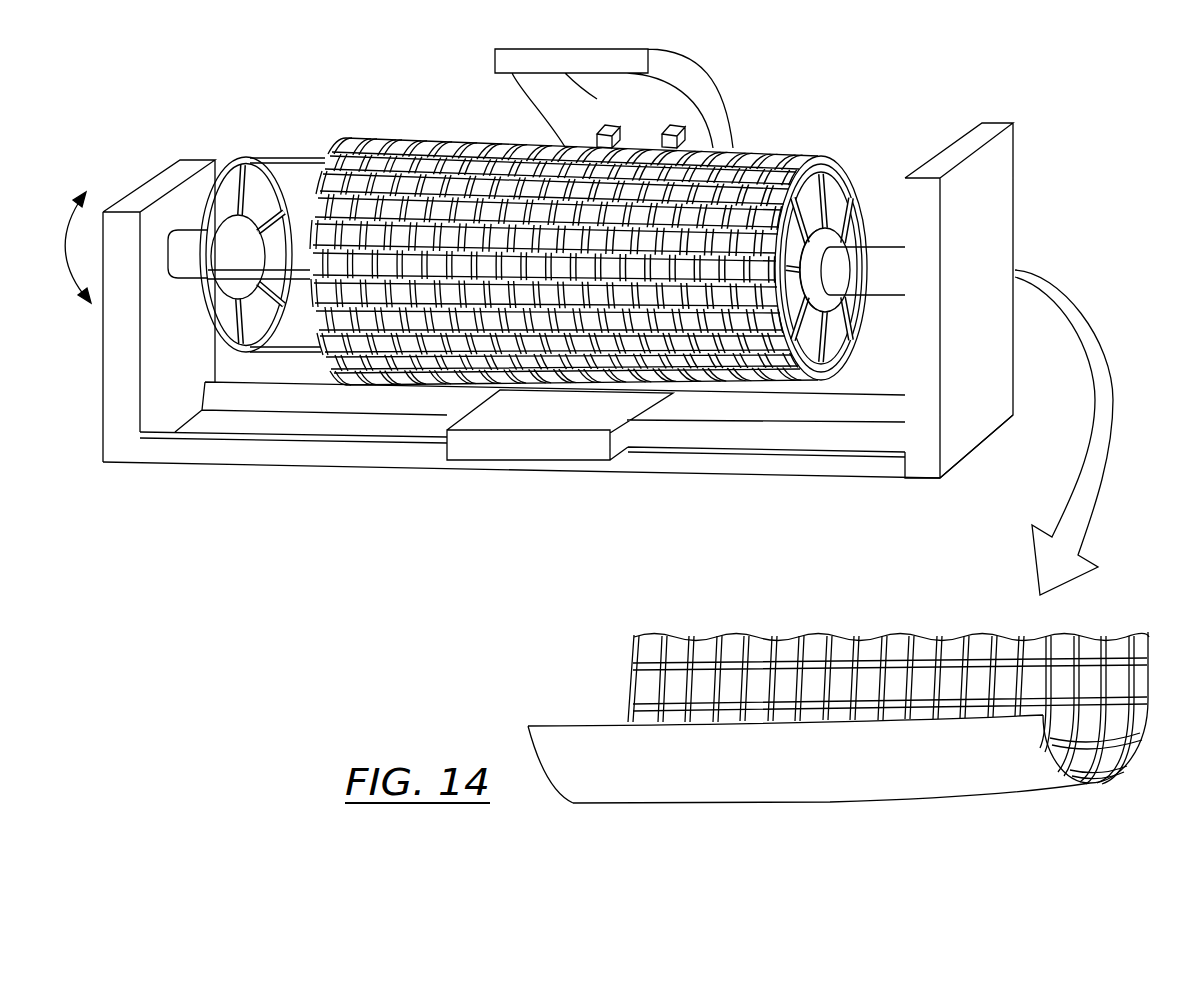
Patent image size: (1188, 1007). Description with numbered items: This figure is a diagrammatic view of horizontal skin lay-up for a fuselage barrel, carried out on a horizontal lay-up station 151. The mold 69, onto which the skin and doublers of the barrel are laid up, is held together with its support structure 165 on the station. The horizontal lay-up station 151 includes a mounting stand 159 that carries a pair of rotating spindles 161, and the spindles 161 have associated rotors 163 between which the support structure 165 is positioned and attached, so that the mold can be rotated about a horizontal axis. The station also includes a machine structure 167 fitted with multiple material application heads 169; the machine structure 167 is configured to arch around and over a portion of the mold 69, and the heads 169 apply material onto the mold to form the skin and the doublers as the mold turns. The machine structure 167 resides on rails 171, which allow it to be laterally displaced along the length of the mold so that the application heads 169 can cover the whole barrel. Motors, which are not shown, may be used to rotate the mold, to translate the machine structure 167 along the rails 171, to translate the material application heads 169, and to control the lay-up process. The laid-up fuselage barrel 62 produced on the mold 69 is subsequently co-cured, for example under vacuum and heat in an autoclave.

The horizontal lay-up station 151 is at (589, 308).
The mounting stand 159 is at (995, 123).
The rotating spindles 161 is at (190, 287).
The rotors 163 is at (236, 156).
The support structure 165 is at (327, 153).
The machine structure 167 is at (690, 65).
The material application heads 169 is at (655, 130).
The rails 171 is at (823, 477).
The mold 69 is at (803, 153).
The fuselage barrel 62 is at (610, 805).